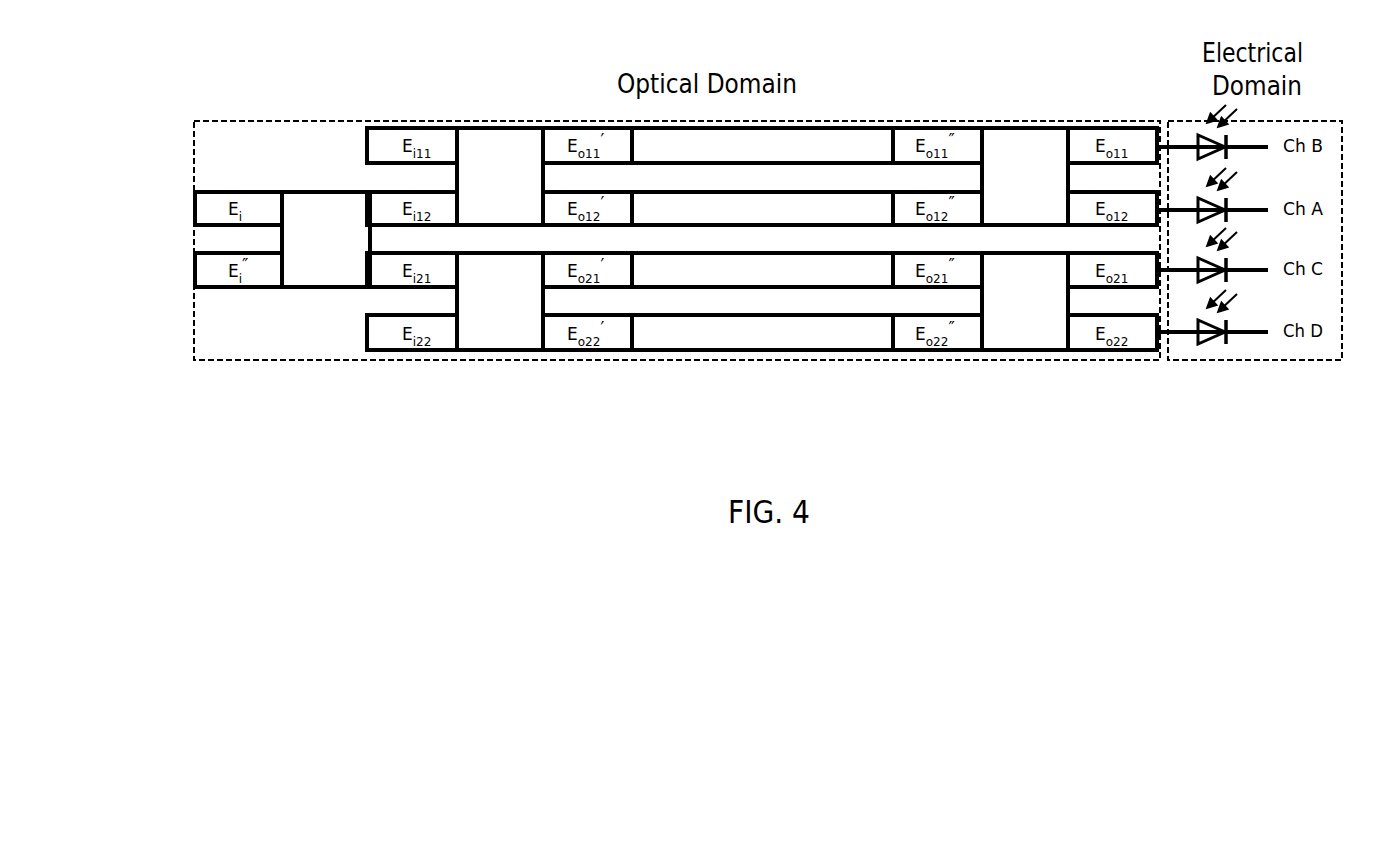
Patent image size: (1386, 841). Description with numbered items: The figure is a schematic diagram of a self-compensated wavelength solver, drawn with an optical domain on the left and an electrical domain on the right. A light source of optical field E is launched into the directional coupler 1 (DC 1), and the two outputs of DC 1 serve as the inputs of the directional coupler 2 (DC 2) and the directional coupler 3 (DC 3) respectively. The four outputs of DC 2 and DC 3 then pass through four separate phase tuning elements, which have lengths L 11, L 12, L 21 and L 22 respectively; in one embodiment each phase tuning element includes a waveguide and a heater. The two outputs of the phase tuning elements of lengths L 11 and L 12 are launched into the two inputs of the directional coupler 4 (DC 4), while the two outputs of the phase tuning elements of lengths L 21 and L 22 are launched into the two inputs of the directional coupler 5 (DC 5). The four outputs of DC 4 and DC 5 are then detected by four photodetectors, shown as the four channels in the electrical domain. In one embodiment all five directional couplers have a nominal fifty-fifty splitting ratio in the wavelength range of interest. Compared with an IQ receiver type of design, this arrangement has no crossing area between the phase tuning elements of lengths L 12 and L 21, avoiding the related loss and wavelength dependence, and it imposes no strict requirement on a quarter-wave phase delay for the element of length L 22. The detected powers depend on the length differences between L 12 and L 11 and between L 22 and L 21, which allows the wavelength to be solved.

The directional coupler 1 is at (326, 239).
The directional coupler 2 is at (500, 176).
The directional coupler 3 is at (500, 301).
The directional coupler 4 is at (1025, 176).
The directional coupler 5 is at (1025, 301).
The phase tuning element length 11 is at (762, 145).
The phase tuning element length 12 is at (762, 208).
The phase tuning element length 21 is at (762, 270).
The phase tuning element length 22 is at (762, 332).